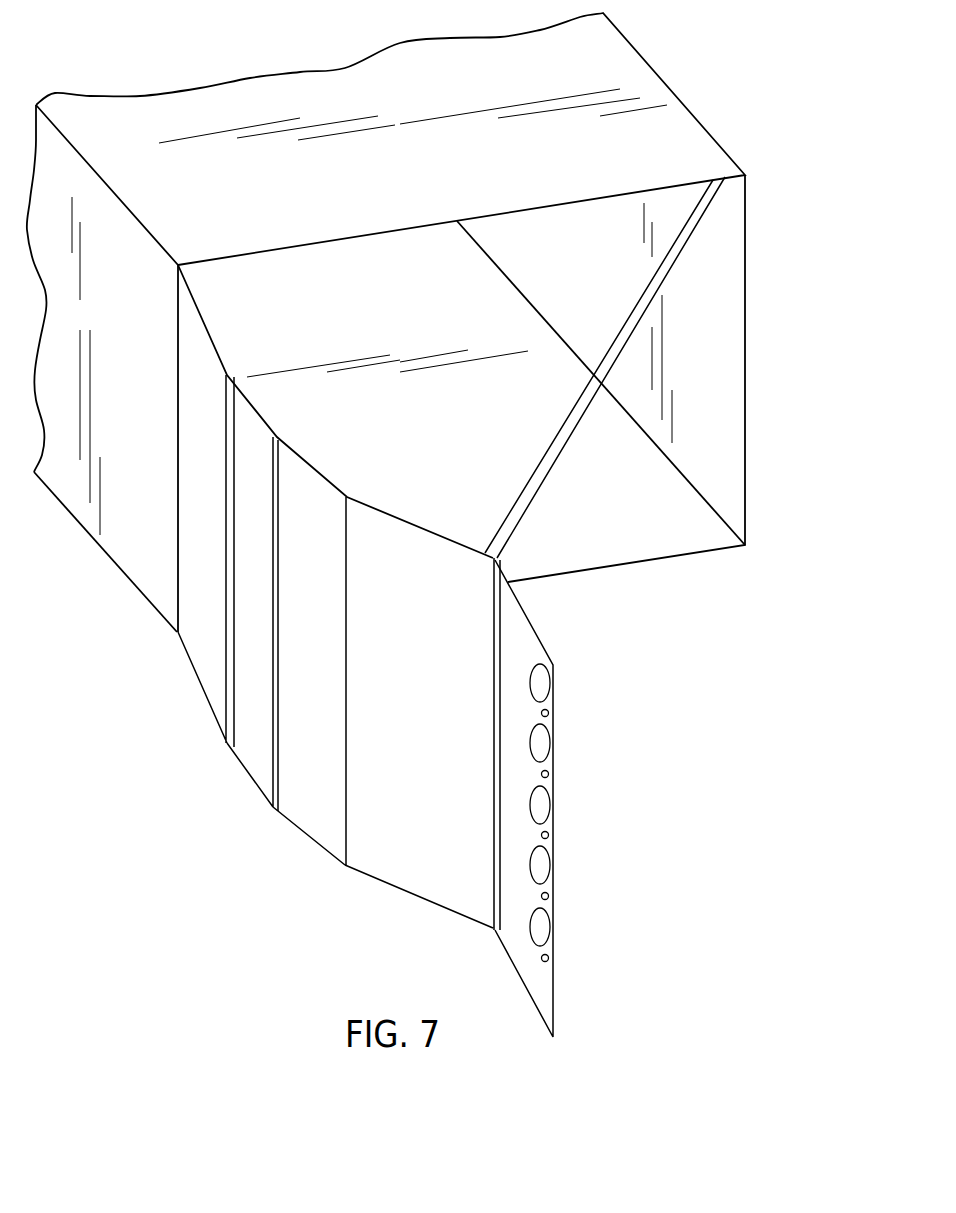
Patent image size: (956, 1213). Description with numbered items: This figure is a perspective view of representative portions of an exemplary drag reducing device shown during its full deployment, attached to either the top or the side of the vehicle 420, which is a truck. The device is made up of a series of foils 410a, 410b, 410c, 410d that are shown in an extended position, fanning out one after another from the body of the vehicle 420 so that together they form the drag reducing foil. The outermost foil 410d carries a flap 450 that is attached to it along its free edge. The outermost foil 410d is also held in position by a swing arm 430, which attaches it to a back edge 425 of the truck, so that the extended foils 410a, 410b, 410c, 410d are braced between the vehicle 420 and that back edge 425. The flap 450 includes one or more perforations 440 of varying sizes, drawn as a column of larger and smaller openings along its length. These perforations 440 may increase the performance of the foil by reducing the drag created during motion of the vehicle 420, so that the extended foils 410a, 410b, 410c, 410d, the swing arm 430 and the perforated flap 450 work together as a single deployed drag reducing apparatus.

The vehicle 420 is at (678, 148).
The back edge 425 is at (714, 280).
The swing arm 430 is at (580, 428).
The perforations 440 is at (541, 687).
The flap 450 is at (577, 798).
The foil 410a is at (203, 653).
The foil 410b is at (245, 745).
The foil 410c is at (320, 797).
The outermost foil 410d is at (398, 863).